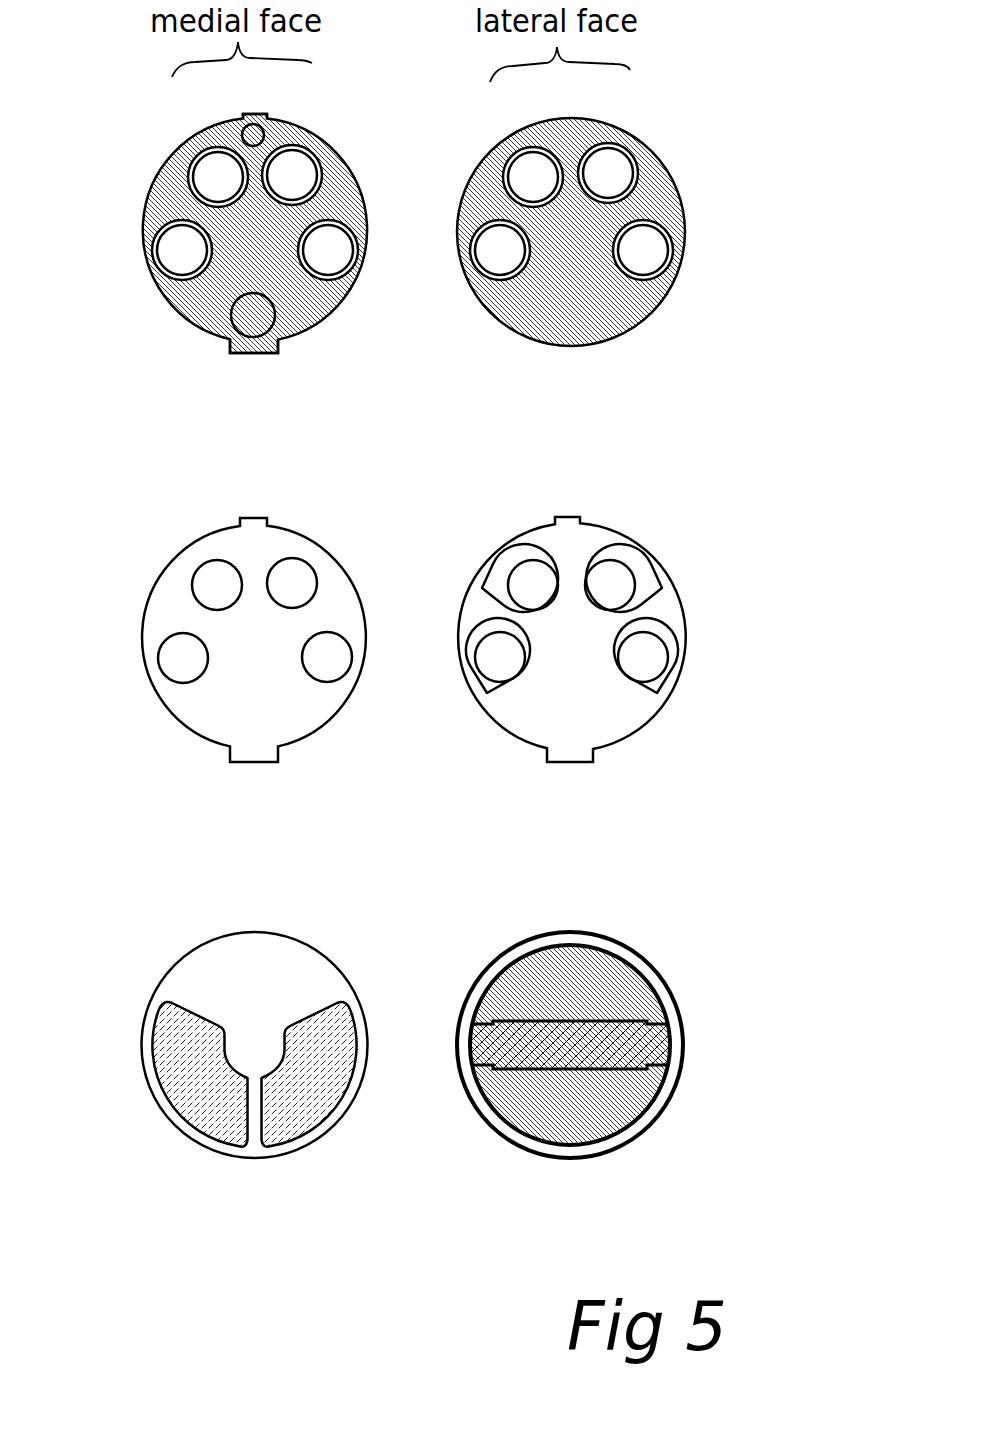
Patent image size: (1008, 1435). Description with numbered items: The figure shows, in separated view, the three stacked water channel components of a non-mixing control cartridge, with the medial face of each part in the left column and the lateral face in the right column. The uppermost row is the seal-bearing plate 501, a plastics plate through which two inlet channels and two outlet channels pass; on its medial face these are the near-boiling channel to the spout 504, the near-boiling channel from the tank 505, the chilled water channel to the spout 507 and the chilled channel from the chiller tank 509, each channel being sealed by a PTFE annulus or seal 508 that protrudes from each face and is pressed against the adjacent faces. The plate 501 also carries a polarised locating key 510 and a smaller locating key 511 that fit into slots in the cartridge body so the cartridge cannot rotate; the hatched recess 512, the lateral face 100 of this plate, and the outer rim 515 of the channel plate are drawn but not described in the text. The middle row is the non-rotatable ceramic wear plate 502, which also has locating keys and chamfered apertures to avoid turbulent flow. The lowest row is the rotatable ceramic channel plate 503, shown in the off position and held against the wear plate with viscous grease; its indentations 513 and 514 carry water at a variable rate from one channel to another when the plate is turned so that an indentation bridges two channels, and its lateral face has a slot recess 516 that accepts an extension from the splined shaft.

The implant body 100 is at (586, 223).
The seal-bearing plate 501 is at (750, 160).
The ceramic wear plate 502 is at (757, 528).
The rotatable ceramic channel plate 503 is at (757, 952).
The near-boiling channel to the spout 504 is at (192, 148).
The near-boiling channel from the tank 505 is at (167, 256).
The chilled water channel to the spout 507 is at (328, 258).
The seal 508 is at (302, 176).
The chilled channel from the chiller tank 509 is at (292, 163).
The polarised locating extension or key 510 is at (247, 115).
The smaller locating key 511 is at (258, 355).
The pin recess 512 is at (280, 317).
The indentation 513 is at (193, 1110).
The indentation 514 is at (305, 1117).
The outer ring 515 is at (543, 942).
The slot recess 516 is at (647, 1070).